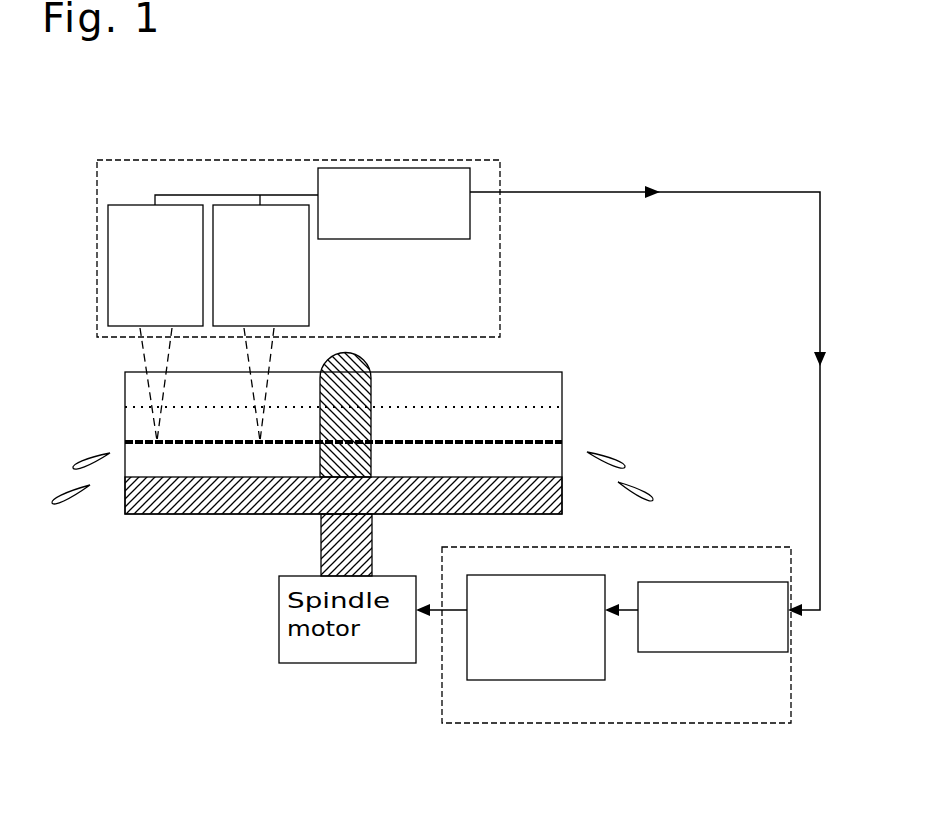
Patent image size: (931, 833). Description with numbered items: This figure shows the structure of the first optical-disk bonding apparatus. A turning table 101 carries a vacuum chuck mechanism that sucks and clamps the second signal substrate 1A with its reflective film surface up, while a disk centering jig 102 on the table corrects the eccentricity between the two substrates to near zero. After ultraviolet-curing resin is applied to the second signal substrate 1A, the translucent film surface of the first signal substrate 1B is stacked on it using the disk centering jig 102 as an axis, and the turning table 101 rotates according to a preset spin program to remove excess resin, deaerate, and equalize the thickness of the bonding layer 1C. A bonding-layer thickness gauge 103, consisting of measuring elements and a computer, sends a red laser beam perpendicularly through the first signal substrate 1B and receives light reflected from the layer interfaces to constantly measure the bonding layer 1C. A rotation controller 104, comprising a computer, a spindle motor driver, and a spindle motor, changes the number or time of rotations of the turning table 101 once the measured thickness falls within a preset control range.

The turning table 101 is at (381, 465).
The disk centering jig 102 is at (350, 407).
The bonding-layer thickness gauge 103 is at (480, 265).
The rotation controller 104 is at (613, 582).
The second signal substrate 1A is at (553, 453).
The first signal substrate 1B is at (553, 383).
The bonding layer 1C is at (553, 418).